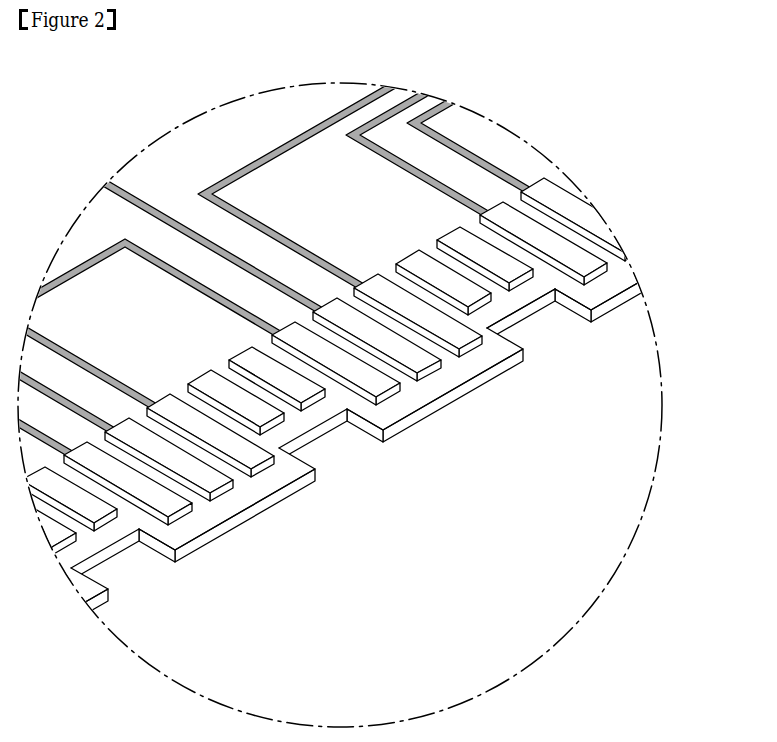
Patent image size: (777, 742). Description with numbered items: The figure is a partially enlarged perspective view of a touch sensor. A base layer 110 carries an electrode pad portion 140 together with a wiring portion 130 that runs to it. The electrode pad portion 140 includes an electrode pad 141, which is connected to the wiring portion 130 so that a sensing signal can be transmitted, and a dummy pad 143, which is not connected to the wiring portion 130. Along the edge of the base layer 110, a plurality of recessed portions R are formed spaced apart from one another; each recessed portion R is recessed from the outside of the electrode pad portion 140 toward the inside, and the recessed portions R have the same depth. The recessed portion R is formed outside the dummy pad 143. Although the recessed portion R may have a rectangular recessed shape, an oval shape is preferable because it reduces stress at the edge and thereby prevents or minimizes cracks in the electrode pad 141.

The base layer 110 is at (458, 393).
The wiring portion 130 is at (138, 200).
The electrode pad portion 140 is at (324, 396).
The electrode pad 141 is at (220, 488).
The dummy pad 143 is at (277, 420).
The recessed portion R is at (537, 335).